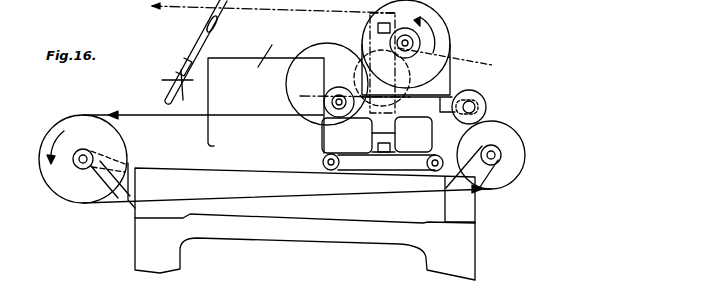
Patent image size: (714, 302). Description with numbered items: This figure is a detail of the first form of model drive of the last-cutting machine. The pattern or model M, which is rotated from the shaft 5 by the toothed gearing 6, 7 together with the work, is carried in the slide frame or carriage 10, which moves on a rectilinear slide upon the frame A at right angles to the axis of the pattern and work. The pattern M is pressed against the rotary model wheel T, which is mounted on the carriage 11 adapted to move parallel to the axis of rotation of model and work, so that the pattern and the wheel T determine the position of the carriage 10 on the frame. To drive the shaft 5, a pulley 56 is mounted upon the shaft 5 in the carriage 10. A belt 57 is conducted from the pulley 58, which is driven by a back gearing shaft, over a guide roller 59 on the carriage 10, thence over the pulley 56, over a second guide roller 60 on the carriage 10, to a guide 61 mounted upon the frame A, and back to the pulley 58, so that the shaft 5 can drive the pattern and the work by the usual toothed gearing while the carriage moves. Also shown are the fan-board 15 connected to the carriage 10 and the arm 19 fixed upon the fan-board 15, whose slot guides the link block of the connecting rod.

The shaft 5 is at (407, 42).
The gearing 6 is at (407, 114).
The gearing 7 is at (450, 59).
The carriage 10 is at (438, 108).
The carriage 11 is at (276, 52).
The fan-board 15 is at (165, 88).
The arm 19 is at (204, 37).
The pulley 56 is at (443, 41).
The belt 57 is at (223, 118).
The pulley 58 is at (65, 187).
The guide roller 59 is at (326, 90).
The second guide roller 60 is at (480, 105).
The guide 61 is at (507, 170).
The frame A is at (465, 247).
The model wheel T is at (322, 44).
The pattern M is at (431, 66).